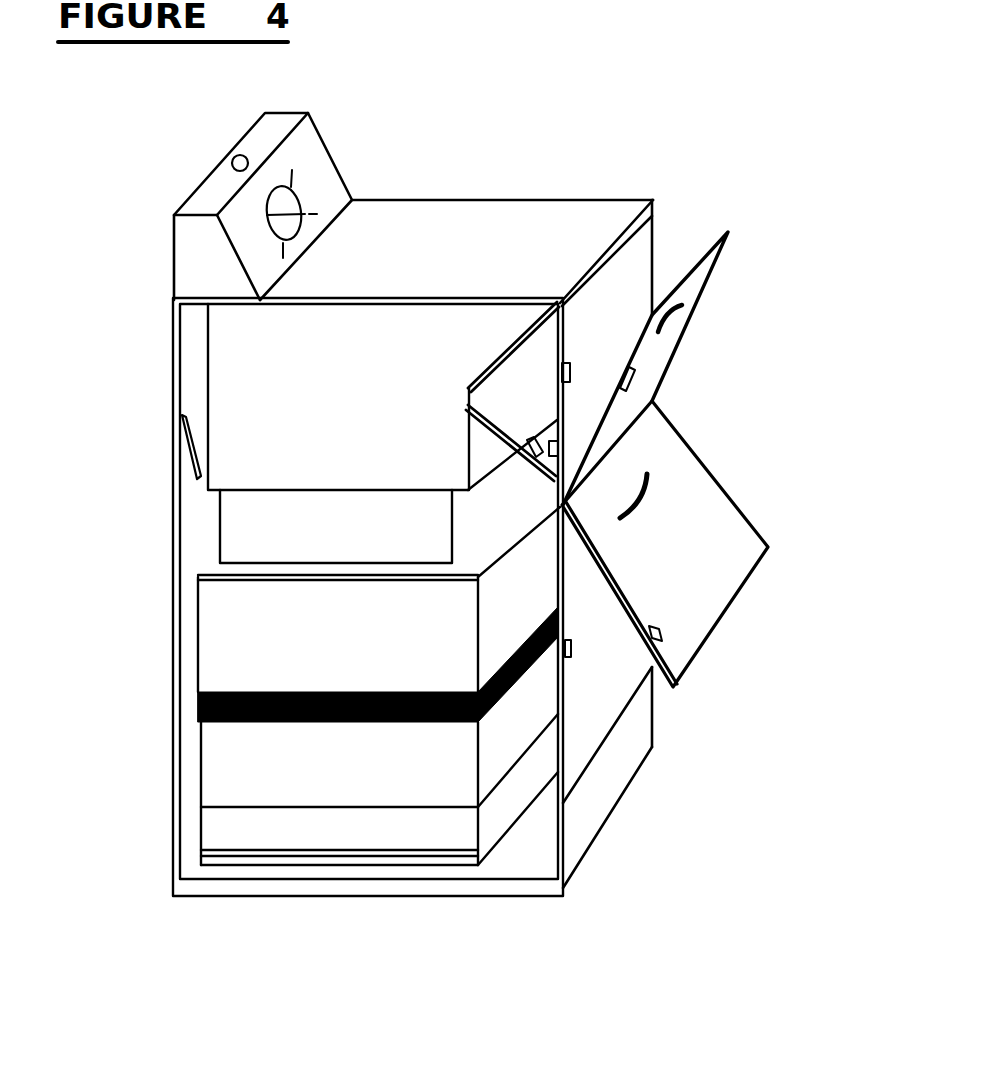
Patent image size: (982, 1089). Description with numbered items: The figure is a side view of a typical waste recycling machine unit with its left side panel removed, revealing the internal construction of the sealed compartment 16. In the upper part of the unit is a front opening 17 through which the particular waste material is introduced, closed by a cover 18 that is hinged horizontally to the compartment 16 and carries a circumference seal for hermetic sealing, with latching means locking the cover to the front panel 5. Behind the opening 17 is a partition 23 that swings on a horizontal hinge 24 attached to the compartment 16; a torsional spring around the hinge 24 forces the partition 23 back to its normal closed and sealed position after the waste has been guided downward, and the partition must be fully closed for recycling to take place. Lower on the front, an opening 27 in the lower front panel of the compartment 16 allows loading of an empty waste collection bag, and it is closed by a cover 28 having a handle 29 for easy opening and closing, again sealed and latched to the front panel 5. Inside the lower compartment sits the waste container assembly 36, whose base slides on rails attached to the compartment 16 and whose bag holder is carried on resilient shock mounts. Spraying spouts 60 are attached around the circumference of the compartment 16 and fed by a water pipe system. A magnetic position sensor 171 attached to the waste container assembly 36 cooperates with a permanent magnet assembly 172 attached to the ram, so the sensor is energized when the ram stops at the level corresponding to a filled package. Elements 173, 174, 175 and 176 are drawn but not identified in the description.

The front panel 5 is at (622, 765).
The sealed compartment 16 is at (172, 543).
The front opening 17 is at (628, 285).
The cover 18 is at (736, 227).
The partition 23 is at (502, 403).
The horizontal hinge 24 is at (494, 374).
The opening 27 is at (620, 692).
The cover 28 is at (705, 518).
The handle 29 is at (649, 481).
The waste container assembly 36 is at (243, 836).
The spraying spouts 60 is at (196, 462).
The magnetic position sensor 171 is at (561, 432).
The permanent magnet assembly 172 is at (545, 448).
The door catch 173 is at (632, 378).
The frame catch 174 is at (572, 368).
The door catch 175 is at (662, 636).
The frame catch 176 is at (571, 647).